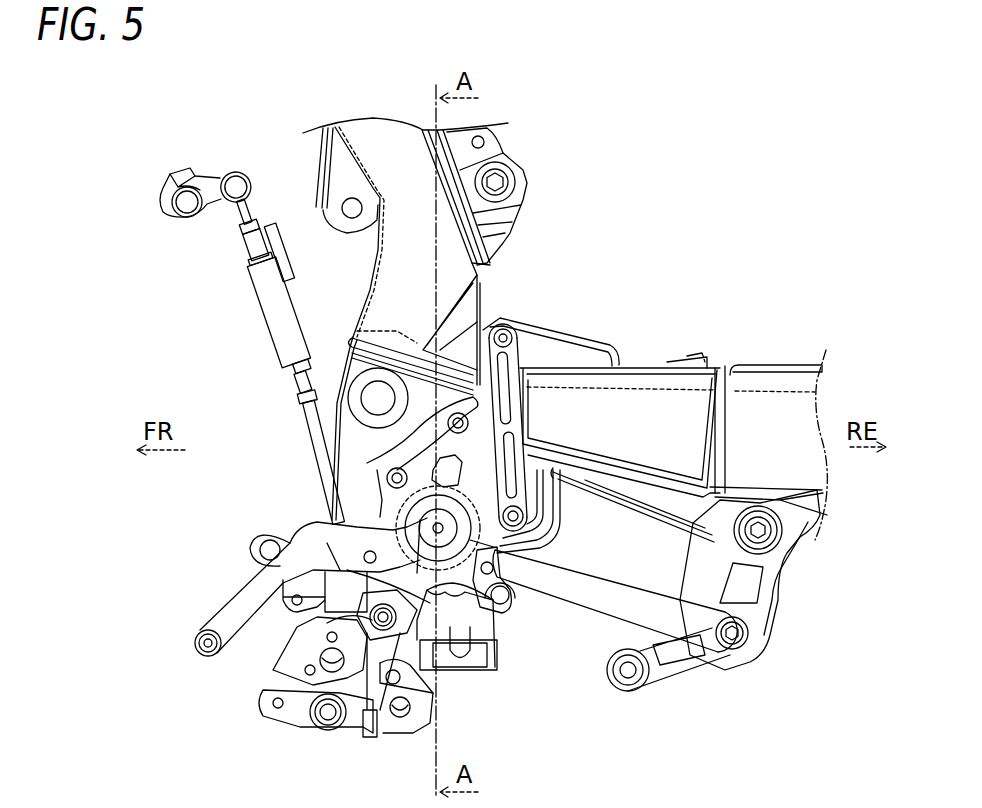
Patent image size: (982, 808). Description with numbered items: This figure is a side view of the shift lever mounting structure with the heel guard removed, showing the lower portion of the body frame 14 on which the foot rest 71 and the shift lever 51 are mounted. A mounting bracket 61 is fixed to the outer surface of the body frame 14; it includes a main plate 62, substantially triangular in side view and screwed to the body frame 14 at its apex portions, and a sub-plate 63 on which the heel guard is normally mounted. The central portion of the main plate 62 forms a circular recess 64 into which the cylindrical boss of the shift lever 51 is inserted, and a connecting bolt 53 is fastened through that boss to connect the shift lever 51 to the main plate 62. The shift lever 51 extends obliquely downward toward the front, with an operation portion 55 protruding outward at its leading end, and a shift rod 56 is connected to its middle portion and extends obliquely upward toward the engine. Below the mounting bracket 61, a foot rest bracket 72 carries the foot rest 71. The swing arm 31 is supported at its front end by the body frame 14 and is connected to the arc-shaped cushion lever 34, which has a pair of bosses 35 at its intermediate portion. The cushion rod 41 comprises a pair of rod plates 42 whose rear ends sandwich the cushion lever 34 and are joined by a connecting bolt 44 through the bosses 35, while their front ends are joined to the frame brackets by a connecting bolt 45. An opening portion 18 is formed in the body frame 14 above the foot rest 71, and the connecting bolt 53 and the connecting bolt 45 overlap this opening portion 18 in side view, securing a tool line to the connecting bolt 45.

The body frame 14 is at (380, 312).
The shift rod 56 is at (274, 327).
The sub-plate 63 is at (517, 365).
The swing arm 31 is at (753, 387).
The mounting bracket 61 is at (405, 450).
The main plate 62 is at (418, 472).
The opening portion 18 is at (350, 497).
The connecting bolt 53 is at (415, 523).
The shift lever 51 is at (240, 607).
The operation portion 55 is at (203, 633).
The connecting bolt 45 is at (360, 613).
The foot rest bracket 72 is at (403, 733).
The foot rest 71 is at (462, 655).
The cushion rod 41 is at (568, 622).
The circular recess 64 is at (552, 540).
The rod plates 42 is at (640, 600).
The cushion lever 34 is at (787, 583).
The bosses 35 is at (770, 643).
The connecting bolt 44 is at (725, 643).